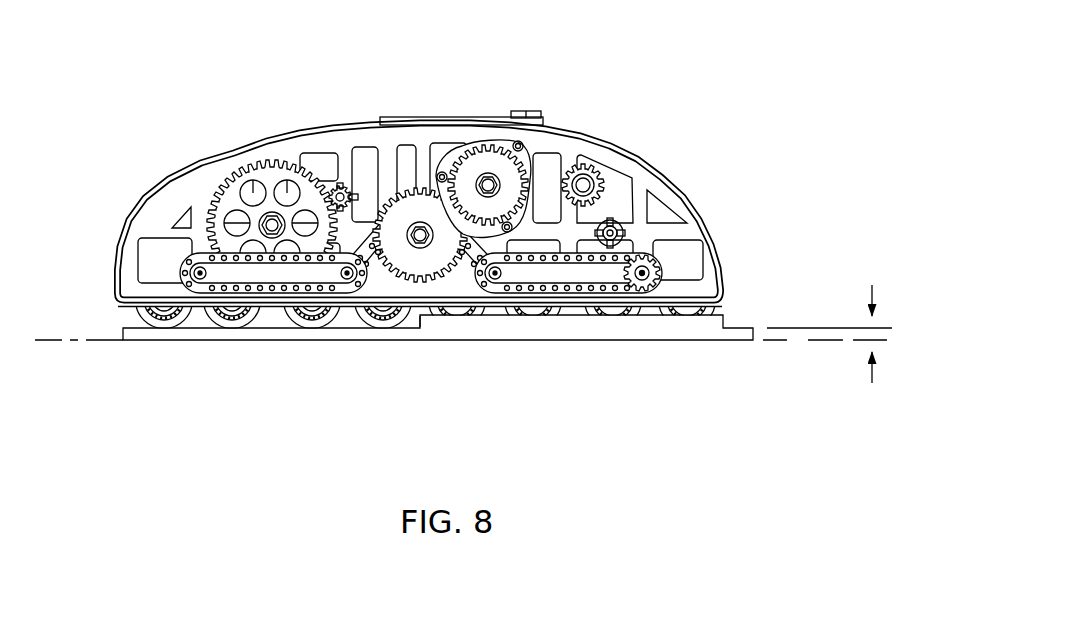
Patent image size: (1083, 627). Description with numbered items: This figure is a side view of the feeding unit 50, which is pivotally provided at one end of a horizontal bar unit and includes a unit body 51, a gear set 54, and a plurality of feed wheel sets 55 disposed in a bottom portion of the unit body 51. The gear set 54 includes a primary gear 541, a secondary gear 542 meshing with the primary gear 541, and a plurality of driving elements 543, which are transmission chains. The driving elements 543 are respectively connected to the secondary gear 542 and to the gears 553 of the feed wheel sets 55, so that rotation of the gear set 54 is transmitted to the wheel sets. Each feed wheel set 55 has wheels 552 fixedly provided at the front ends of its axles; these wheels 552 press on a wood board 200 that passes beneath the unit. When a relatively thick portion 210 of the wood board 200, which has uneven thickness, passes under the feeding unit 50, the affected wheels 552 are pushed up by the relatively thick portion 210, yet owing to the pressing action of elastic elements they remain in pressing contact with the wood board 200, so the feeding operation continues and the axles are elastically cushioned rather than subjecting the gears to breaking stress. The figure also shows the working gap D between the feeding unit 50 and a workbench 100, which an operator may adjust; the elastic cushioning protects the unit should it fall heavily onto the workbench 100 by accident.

The feeding unit 50 is at (194, 167).
The unit body 51 is at (666, 155).
The gear set 54 is at (379, 190).
The primary gear 541 is at (490, 166).
The secondary gear 542 is at (408, 185).
The driving elements 543 is at (655, 260).
The feed wheel sets 55 is at (116, 317).
The wheels 552 is at (312, 324).
The gears 553 is at (603, 257).
The wood board 200 is at (263, 355).
The relatively thick portion 210 is at (432, 329).
The workbench 100 is at (814, 357).